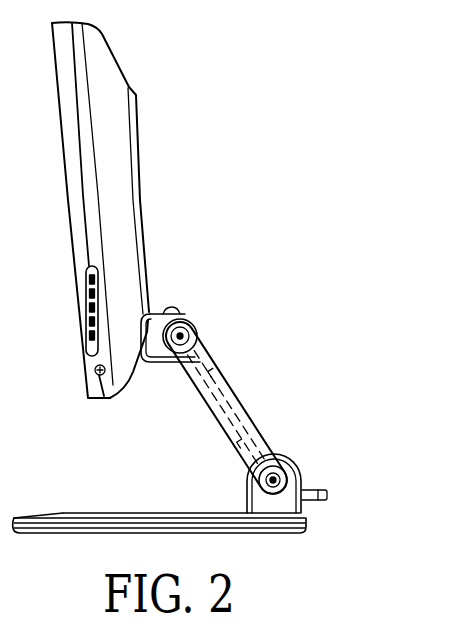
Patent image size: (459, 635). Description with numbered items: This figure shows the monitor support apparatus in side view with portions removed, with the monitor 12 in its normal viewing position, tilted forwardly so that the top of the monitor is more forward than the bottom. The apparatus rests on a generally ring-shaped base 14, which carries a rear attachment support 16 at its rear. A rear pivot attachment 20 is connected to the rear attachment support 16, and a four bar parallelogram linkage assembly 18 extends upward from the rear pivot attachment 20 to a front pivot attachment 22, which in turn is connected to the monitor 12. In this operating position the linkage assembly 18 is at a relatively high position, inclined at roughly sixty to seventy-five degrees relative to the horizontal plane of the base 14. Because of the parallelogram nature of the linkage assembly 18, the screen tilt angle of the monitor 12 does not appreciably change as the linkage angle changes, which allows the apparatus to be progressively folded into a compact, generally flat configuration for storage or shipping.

The monitor 12 is at (120, 199).
The base 14 is at (115, 505).
The rear attachment support 16 is at (314, 470).
The four bar parallelogram linkage assembly 18 is at (242, 388).
The rear pivot attachment 20 is at (292, 468).
The front pivot attachment 22 is at (207, 332).